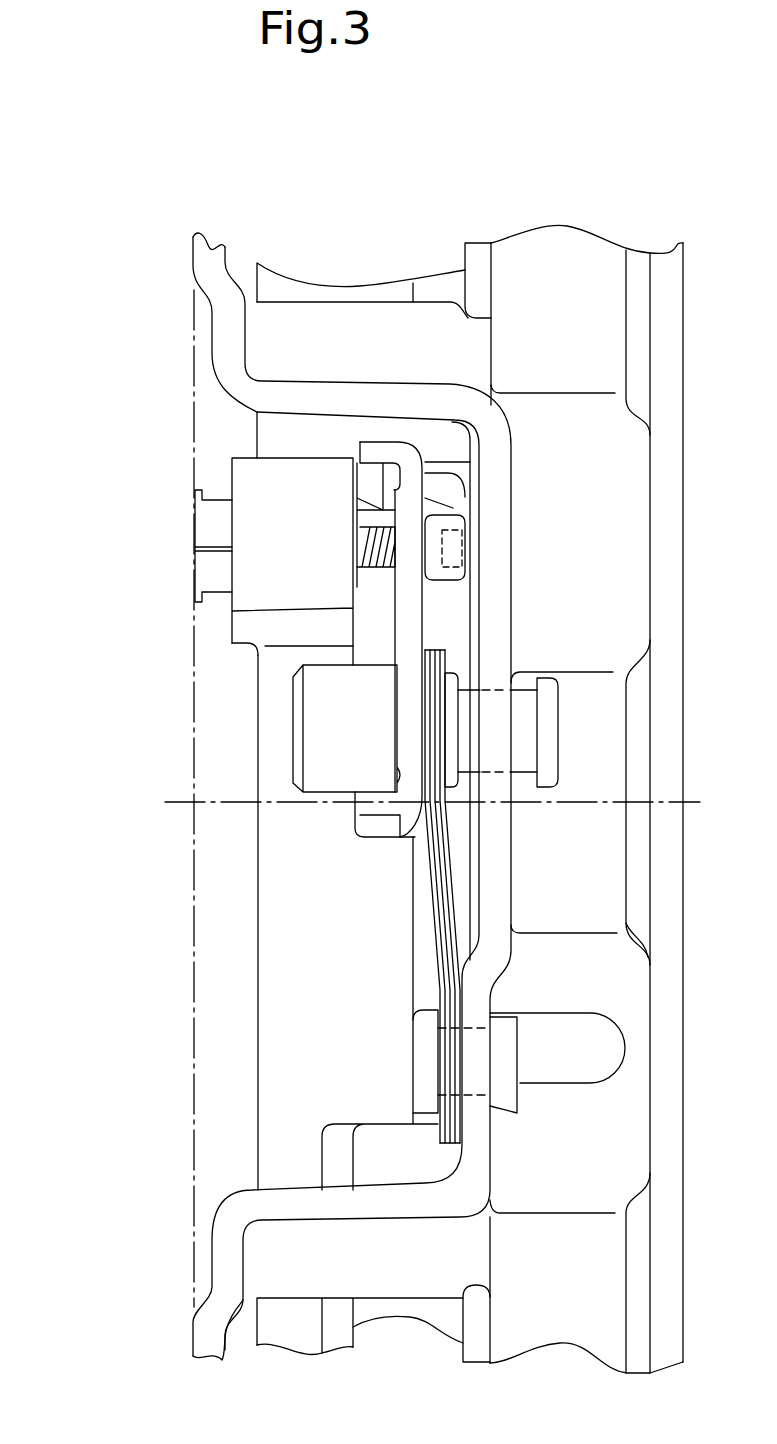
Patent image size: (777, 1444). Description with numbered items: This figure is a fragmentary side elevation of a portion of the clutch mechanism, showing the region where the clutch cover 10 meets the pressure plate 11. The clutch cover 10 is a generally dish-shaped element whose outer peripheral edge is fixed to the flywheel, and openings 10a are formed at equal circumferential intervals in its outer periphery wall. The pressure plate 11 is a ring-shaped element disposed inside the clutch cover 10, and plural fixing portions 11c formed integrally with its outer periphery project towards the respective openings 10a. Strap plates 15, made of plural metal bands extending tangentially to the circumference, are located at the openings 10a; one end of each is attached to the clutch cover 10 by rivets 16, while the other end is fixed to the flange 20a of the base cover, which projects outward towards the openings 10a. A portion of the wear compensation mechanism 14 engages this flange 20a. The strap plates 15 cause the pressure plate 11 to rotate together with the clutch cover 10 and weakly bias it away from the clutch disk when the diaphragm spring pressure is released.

The clutch cover 10 is at (205, 262).
The openings 10a is at (290, 412).
The pressure plate 11 is at (288, 845).
The fixing portions 11c is at (287, 524).
The wear compensation mechanism 14 is at (449, 628).
The strap plates 15 is at (430, 910).
The rivets 16 is at (423, 1043).
The flange 20a is at (407, 615).